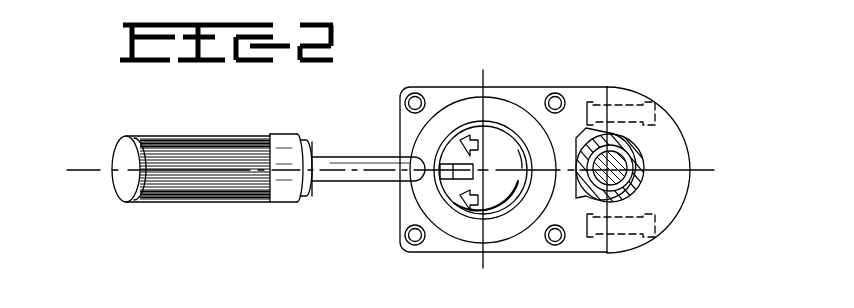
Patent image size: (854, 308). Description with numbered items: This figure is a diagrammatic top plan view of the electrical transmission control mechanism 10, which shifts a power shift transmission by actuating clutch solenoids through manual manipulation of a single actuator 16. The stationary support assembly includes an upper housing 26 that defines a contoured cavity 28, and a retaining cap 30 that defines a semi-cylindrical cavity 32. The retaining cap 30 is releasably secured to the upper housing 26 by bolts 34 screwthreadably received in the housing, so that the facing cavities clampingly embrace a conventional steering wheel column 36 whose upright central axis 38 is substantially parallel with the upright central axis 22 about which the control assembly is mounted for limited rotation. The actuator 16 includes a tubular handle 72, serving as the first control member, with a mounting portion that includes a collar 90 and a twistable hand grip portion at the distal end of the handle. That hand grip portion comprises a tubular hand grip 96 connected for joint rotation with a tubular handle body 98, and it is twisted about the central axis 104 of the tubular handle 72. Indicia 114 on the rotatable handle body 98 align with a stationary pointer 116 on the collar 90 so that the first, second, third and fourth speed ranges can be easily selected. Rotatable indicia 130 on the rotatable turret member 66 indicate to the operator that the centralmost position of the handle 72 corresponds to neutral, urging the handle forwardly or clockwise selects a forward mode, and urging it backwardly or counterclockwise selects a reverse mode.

The electrical transmission control mechanism 10 is at (656, 60).
The actuator 16 is at (185, 130).
The central axis 22 is at (485, 168).
The upper housing 26 is at (533, 92).
The contoured cavity 28 is at (590, 127).
The retaining cap 30 is at (672, 130).
The semi-cylindrical cavity 32 is at (612, 203).
The bolts 34 is at (655, 108).
The steering wheel column 36 is at (648, 143).
The upright central axis 38 is at (627, 186).
The rotatable turret member 66 is at (451, 227).
The tubular handle 72 is at (371, 181).
The collar 90 is at (296, 203).
The tubular hand grip 96 is at (173, 200).
The tubular handle body 98 is at (275, 202).
The central axis 104 is at (97, 150).
The indicia 114 is at (284, 140).
The stationary pointer 116 is at (298, 148).
The rotatable indicia 130 is at (449, 148).